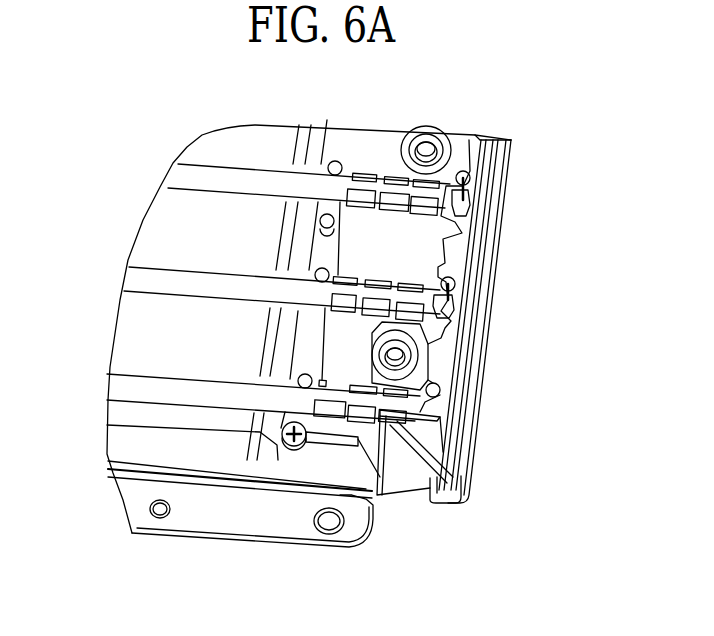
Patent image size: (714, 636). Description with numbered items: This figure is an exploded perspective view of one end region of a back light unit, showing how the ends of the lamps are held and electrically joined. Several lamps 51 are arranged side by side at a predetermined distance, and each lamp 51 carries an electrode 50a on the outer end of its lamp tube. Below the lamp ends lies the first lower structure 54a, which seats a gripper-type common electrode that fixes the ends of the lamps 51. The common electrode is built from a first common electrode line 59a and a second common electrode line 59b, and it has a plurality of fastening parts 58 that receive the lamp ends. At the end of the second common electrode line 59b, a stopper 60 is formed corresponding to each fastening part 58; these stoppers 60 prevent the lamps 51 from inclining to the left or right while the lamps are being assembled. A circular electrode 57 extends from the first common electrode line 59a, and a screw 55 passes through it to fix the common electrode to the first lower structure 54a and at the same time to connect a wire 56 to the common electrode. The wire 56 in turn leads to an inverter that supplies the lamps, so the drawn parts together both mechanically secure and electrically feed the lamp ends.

The lamp 51 is at (120, 388).
The first common electrode line 59a is at (323, 260).
The second common electrode line 59b is at (460, 238).
The fastening part 58 is at (437, 297).
The electrode 50a is at (453, 185).
The stopper 60 is at (452, 306).
The first lower structure 54a is at (463, 377).
The screw 55 is at (290, 425).
The circular electrode 57 is at (303, 448).
The wire 56 is at (355, 436).